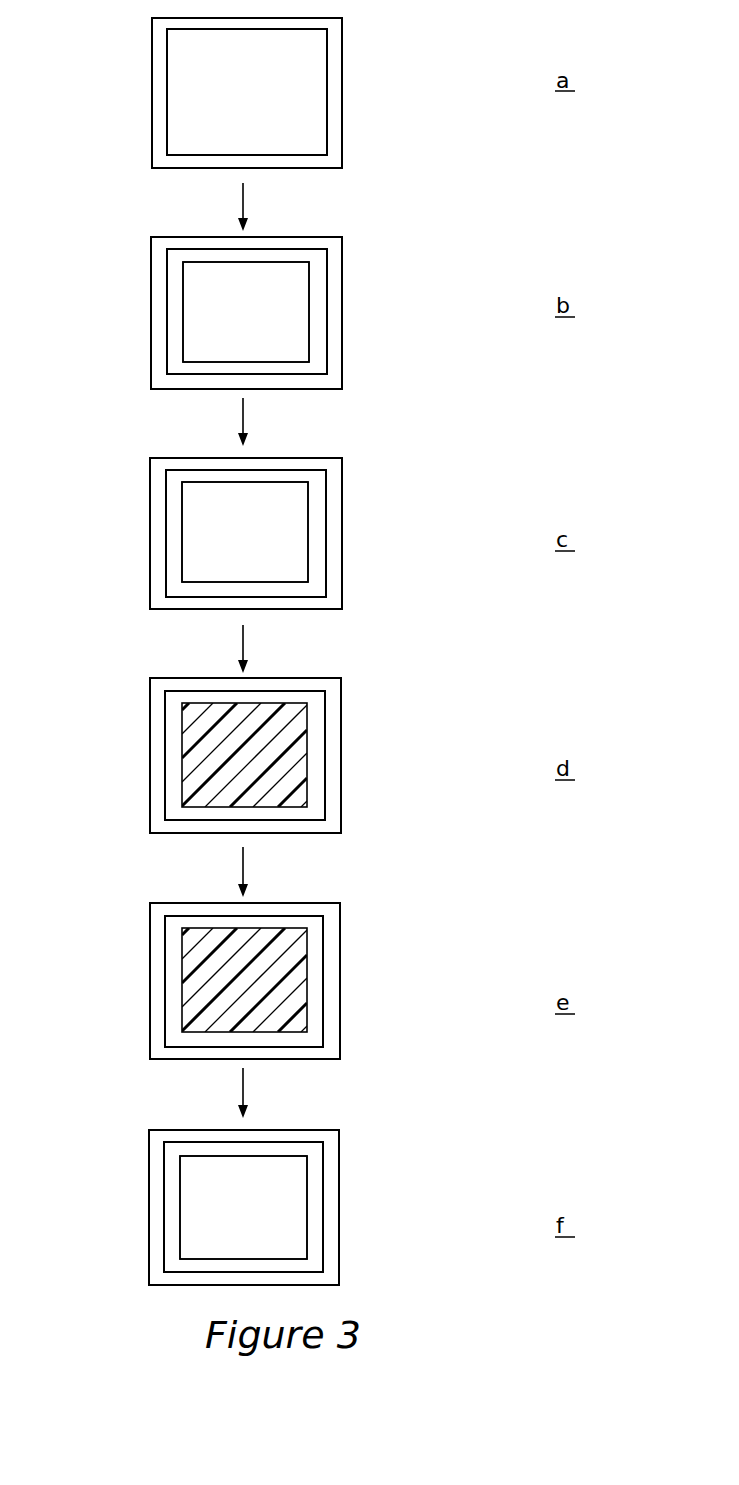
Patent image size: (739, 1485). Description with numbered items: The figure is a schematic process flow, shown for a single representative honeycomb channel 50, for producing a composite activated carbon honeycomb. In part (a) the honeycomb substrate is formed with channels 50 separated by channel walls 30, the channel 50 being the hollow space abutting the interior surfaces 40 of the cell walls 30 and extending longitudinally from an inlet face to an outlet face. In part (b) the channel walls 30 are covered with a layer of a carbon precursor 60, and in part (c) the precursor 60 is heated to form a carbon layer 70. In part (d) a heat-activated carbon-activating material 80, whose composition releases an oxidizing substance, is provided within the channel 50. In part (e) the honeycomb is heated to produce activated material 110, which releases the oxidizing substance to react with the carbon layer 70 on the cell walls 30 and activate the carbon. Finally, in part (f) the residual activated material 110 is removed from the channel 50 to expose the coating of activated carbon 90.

The channel wall 30 is at (191, 651).
The interior surface 40 is at (181, 647).
The channel 50 is at (246, 663).
The carbon precursor 60 is at (313, 350).
The carbon layer 70 is at (300, 758).
The carbon-activating material 80 is at (290, 730).
The activated material 110 is at (275, 950).
The activated carbon 90 is at (313, 1258).